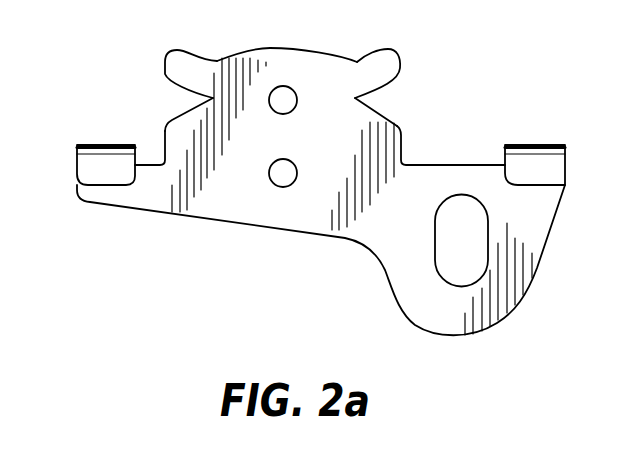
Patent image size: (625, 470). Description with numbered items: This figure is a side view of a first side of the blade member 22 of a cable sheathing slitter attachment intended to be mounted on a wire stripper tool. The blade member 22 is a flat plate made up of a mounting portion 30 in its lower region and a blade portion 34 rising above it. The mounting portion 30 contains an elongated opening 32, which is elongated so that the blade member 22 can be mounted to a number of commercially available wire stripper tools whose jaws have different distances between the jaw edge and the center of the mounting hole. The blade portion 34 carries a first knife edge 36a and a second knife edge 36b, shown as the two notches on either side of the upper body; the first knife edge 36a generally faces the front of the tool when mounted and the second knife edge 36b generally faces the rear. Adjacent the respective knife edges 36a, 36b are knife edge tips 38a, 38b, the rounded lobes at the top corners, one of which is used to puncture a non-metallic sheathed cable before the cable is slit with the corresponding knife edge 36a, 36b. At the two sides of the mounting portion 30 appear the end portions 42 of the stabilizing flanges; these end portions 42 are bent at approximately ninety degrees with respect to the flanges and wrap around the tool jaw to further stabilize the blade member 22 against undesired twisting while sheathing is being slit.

The blade member 22 is at (468, 98).
The mounting portion 30 is at (378, 232).
The elongated opening 32 is at (455, 255).
The blade portion 34 is at (288, 57).
The first knife edge 36a is at (212, 99).
The second knife edge 36b is at (360, 100).
The knife edge tip 38a is at (167, 55).
The knife edge tip 38b is at (393, 50).
The end portions 42 is at (97, 158).